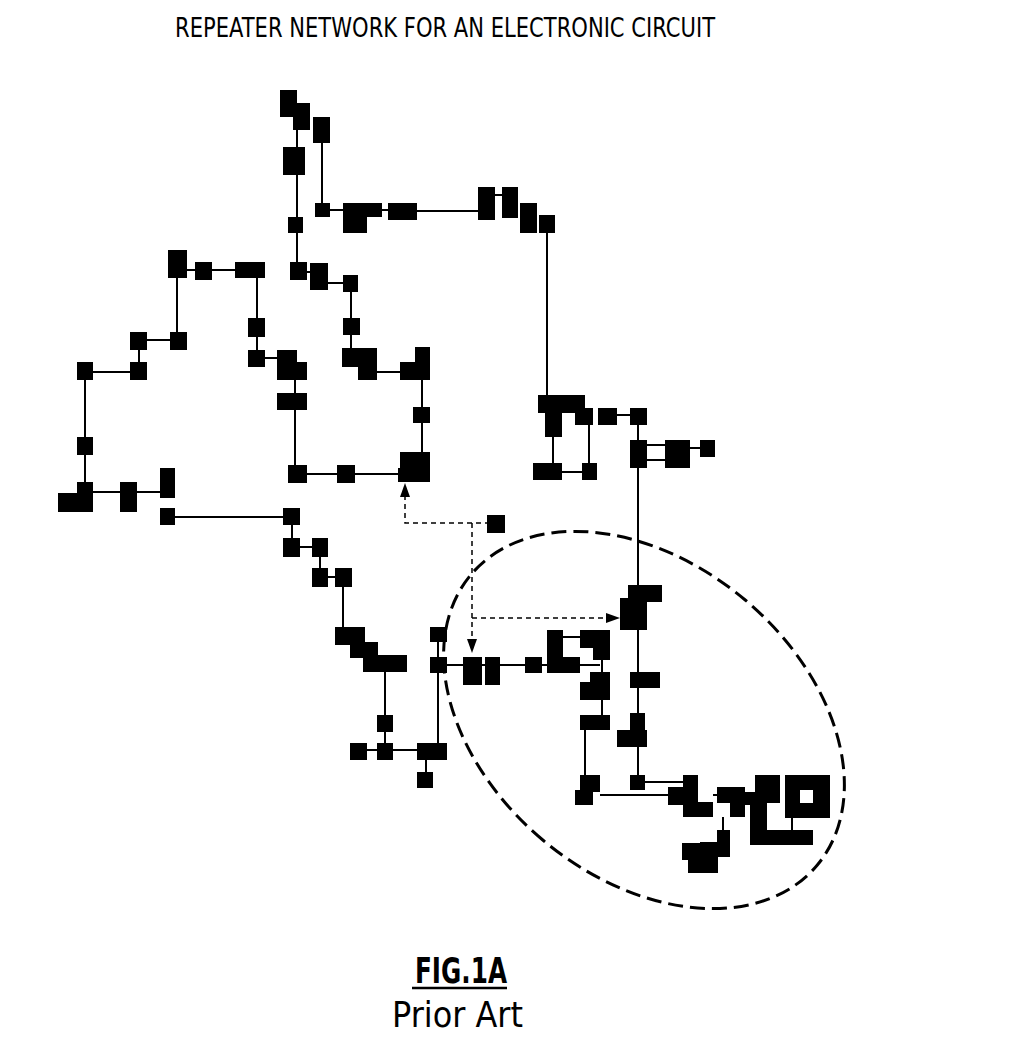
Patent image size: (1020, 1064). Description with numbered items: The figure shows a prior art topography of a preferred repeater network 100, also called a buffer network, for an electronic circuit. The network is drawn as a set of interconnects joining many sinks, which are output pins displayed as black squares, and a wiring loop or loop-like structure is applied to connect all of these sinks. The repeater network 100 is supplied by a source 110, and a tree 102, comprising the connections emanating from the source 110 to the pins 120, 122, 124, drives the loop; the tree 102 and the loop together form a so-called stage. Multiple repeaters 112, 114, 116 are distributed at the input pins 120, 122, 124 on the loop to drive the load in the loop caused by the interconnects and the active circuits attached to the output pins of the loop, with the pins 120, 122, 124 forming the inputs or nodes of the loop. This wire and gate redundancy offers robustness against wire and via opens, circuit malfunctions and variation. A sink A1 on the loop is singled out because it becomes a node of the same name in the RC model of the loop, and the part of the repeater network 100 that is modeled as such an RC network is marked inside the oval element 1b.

The repeater network 100 is at (220, 213).
The tree 102 is at (472, 449).
The source 110 is at (505, 518).
The repeater 112 is at (409, 493).
The repeater 114 is at (468, 646).
The repeater 116 is at (615, 615).
The input pin 120 is at (400, 468).
The input pin 122 is at (478, 656).
The input pin 124 is at (627, 627).
The oval element 1b is at (533, 832).
The sink A1 is at (672, 809).